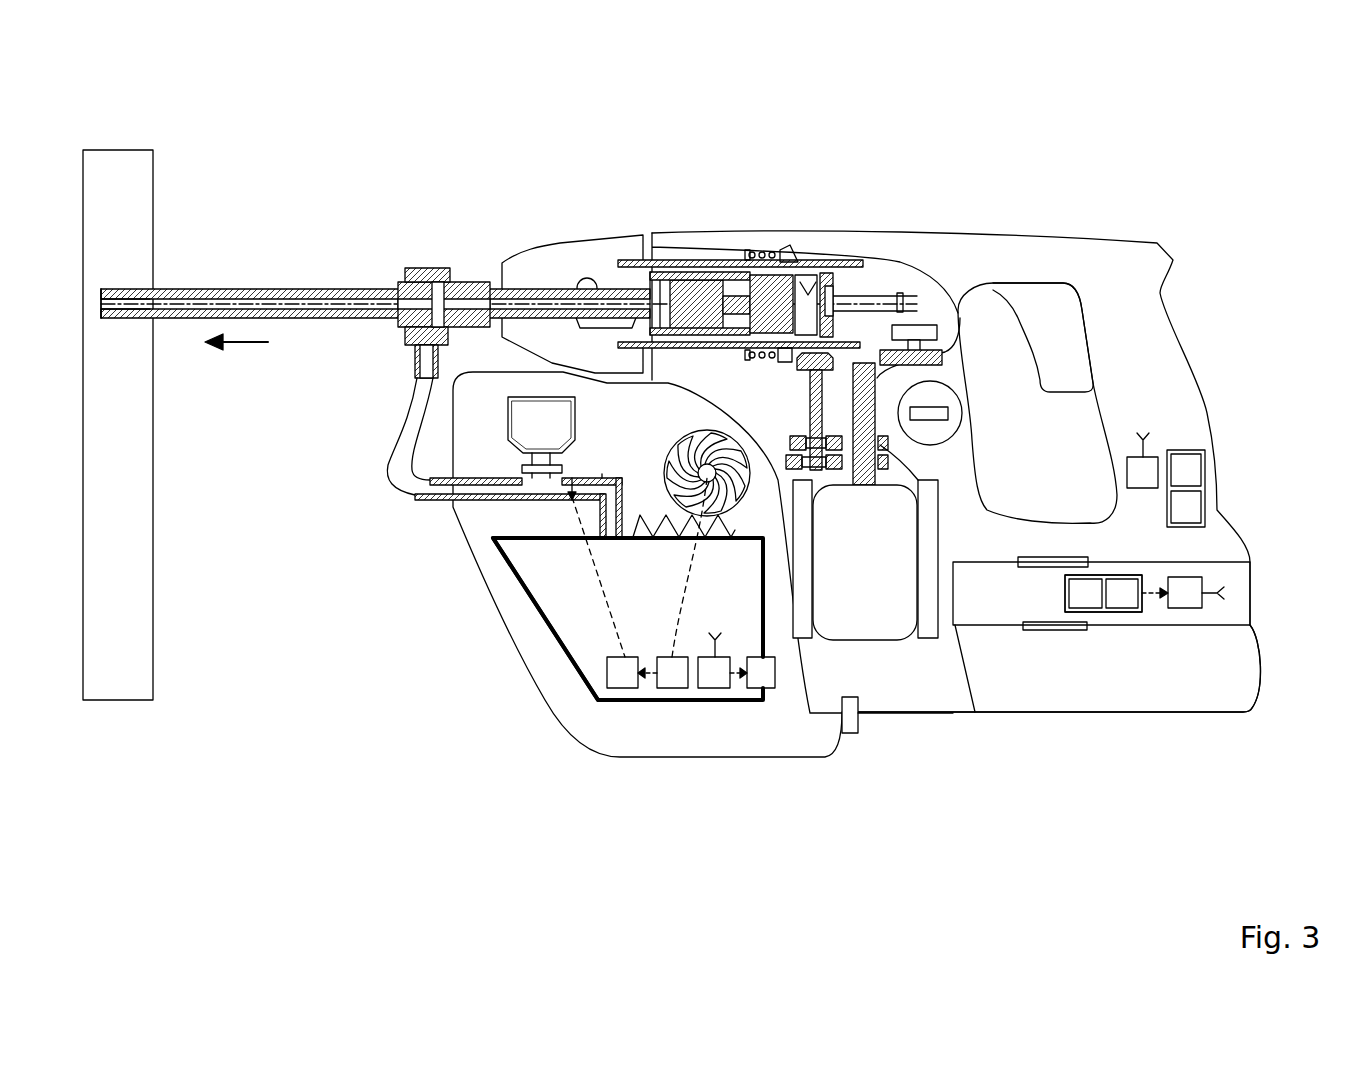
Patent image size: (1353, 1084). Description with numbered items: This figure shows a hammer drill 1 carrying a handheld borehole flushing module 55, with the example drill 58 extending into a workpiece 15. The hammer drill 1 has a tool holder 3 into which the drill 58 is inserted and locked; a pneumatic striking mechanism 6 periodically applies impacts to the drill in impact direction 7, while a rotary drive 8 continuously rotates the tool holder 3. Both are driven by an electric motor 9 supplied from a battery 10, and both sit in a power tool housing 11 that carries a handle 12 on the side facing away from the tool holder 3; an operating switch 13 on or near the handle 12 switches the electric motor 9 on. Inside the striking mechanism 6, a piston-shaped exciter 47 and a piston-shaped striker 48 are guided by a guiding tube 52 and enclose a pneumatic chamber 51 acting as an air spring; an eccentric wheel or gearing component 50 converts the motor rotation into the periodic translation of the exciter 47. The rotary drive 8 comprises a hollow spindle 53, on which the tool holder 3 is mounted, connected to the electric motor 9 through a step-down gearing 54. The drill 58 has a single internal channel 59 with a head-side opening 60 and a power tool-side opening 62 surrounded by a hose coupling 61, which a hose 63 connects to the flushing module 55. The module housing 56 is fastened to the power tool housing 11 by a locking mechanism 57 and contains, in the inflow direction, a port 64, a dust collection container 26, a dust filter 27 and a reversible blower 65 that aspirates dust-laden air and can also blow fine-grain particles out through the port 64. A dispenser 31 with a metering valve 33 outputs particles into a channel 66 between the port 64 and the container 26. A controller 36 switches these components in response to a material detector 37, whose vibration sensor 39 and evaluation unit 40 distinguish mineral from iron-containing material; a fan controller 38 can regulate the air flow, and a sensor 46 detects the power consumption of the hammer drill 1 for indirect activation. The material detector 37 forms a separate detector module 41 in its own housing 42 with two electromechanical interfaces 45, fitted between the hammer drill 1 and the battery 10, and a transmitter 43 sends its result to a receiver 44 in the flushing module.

The hammer drill 1 is at (510, 127).
The tool holder 3 is at (605, 268).
The pneumatic striking mechanism 6 is at (892, 170).
The impact direction 7 is at (236, 360).
The rotary drive 8 is at (990, 170).
The electric motor 9 is at (875, 528).
The battery 10 is at (1237, 675).
The power tool housing 11 is at (657, 243).
The handle 12 is at (1157, 345).
The operating switch 13 is at (1063, 318).
The workpiece 15 is at (147, 158).
The dust collection container 26 is at (587, 608).
The dust filter 27 is at (600, 688).
The dispenser 31 is at (523, 423).
The metering valve 33 is at (537, 470).
The controller 36 is at (720, 675).
The material detector 37 is at (1090, 770).
The fan controller 38 is at (675, 675).
The vibration sensor 39 is at (1190, 473).
The evaluation unit 40 is at (1190, 505).
The detector module 41 is at (1150, 815).
The housing 42 is at (985, 603).
The transmitter 43 is at (1140, 473).
The receiver 44 is at (762, 675).
The electromechanical interfaces 45 is at (1052, 563).
The sensor 46 is at (697, 288).
The exciter 47 is at (832, 285).
The striker 48 is at (793, 280).
The gearing component 50 is at (787, 573).
The pneumatic chamber 51 is at (805, 287).
The guiding tube 52 is at (762, 290).
The spindle 53 is at (838, 343).
The step-down gearing 54 is at (927, 330).
The borehole flushing module 55 is at (400, 748).
The housing 56 is at (862, 735).
The locking mechanism 57 is at (853, 720).
The drill 58 is at (313, 128).
The internal channel 59 is at (325, 292).
The head-side opening 60 is at (101, 296).
The hose coupling 61 is at (420, 273).
The power tool-side opening 62 is at (438, 290).
The hose 63 is at (405, 447).
The port 64 is at (420, 497).
The blower 65 is at (622, 675).
The channel 66 is at (573, 497).